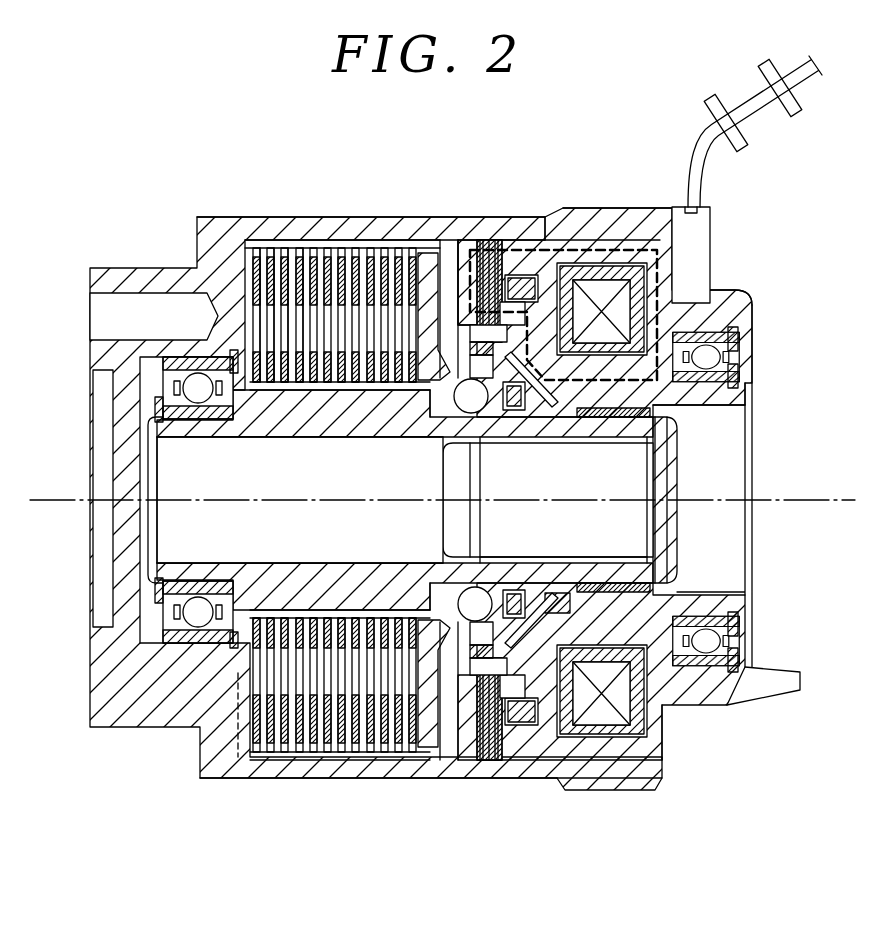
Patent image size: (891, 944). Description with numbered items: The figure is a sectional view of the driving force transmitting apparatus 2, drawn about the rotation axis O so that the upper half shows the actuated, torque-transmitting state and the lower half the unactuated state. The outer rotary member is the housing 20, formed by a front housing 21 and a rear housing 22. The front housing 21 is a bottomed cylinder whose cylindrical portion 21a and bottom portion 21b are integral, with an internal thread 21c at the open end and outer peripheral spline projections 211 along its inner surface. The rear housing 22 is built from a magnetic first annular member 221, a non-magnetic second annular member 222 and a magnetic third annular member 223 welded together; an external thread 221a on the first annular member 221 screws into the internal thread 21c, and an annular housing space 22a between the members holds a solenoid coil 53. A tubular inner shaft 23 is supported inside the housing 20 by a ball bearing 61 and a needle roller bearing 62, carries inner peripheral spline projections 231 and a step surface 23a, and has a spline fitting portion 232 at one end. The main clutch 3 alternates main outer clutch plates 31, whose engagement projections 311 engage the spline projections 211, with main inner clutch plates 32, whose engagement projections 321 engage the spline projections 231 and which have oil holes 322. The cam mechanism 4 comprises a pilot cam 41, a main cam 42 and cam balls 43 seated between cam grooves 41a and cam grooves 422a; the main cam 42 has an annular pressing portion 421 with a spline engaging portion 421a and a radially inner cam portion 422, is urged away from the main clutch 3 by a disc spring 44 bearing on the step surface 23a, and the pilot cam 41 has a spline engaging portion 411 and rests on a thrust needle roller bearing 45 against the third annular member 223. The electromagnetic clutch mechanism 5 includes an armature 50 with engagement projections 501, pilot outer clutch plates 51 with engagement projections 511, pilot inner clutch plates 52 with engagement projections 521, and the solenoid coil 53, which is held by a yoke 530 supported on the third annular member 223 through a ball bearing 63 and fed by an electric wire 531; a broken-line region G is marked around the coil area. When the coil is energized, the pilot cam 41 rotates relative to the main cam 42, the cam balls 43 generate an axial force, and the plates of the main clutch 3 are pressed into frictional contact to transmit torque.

The driving force transmitting apparatus 2 is at (803, 152).
The main clutch 3 is at (216, 770).
The cam mechanism 4 is at (449, 366).
The electromagnetic clutch mechanism 5 is at (503, 235).
The housing 20 is at (790, 176).
The front housing 21 is at (663, 204).
The cylindrical portion 21a is at (300, 227).
The bottom portion 21b is at (220, 267).
The internal thread 21c is at (620, 227).
The rear housing 22 is at (663, 250).
The housing space 22a is at (667, 732).
The inner shaft 23 is at (683, 573).
The step surface 23a is at (428, 600).
The main outer clutch plate 31 is at (378, 757).
The main inner clutch plate 32 is at (247, 413).
The pilot cam 41 is at (547, 410).
The cam groove 41a is at (497, 397).
The main cam 42 is at (318, 147).
The cam ball 43 is at (477, 407).
The disc spring 44 is at (437, 395).
The thrust needle roller bearing 45 is at (518, 615).
The armature 50 is at (472, 240).
The pilot outer clutch plate 51 is at (513, 760).
The pilot inner clutch plate 52 is at (505, 767).
The solenoid coil 53 is at (618, 302).
The ball bearing 61 is at (155, 403).
The needle roller bearing 62 is at (653, 413).
The ball bearing 63 is at (732, 337).
The outer peripheral spline projections 211 is at (243, 753).
The first annular member 221 is at (573, 240).
The external thread 221a is at (603, 767).
The second annular member 222 is at (513, 277).
The third annular member 223 is at (738, 393).
The inner peripheral spline projections 231 is at (313, 613).
The spline fitting portion 232 is at (592, 557).
The engagement projections 311 is at (385, 757).
The engagement projections 321 is at (287, 327).
The oil holes 322 is at (252, 387).
The spline engaging portion 411 is at (472, 667).
The pressing portion 421 is at (428, 247).
The spline engaging portion 421a is at (437, 387).
The cam portion 422 is at (412, 258).
The cam groove 422a is at (468, 398).
The engagement projections 501 is at (468, 238).
The engagement projections 511 is at (482, 660).
The engagement projections 521 is at (495, 650).
The yoke 530 is at (743, 313).
The electric wire 531 is at (702, 160).
The magnetic circuit region G is at (610, 247).
The rotation axis O is at (797, 500).